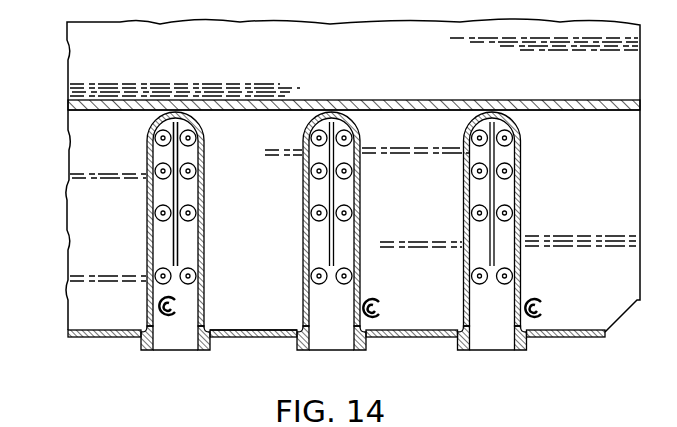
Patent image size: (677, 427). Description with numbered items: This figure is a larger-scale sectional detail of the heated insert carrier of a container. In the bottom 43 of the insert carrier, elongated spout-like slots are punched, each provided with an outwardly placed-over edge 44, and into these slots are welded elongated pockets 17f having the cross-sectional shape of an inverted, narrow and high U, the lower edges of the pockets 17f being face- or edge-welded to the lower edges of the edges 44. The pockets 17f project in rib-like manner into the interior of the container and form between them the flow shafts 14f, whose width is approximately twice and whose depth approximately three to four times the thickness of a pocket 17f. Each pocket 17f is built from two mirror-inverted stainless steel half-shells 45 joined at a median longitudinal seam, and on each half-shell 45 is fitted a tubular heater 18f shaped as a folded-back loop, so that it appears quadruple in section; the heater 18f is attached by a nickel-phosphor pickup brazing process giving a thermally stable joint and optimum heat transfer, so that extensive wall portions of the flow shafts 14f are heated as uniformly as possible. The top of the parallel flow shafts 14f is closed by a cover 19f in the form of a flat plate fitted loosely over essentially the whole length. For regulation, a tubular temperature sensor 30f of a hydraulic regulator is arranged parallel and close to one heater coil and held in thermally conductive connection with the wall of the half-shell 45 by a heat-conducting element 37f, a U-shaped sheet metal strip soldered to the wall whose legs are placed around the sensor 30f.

The flow shafts 14f is at (120, 123).
The pockets 17f is at (203, 118).
The tubular heater 18f is at (190, 198).
The cover 19f is at (478, 100).
The half-shells 45 is at (150, 174).
The temperature sensor 30f is at (158, 305).
The heat-conducting element 37f is at (383, 304).
The bottom 43 is at (225, 311).
The edge 44 is at (460, 345).